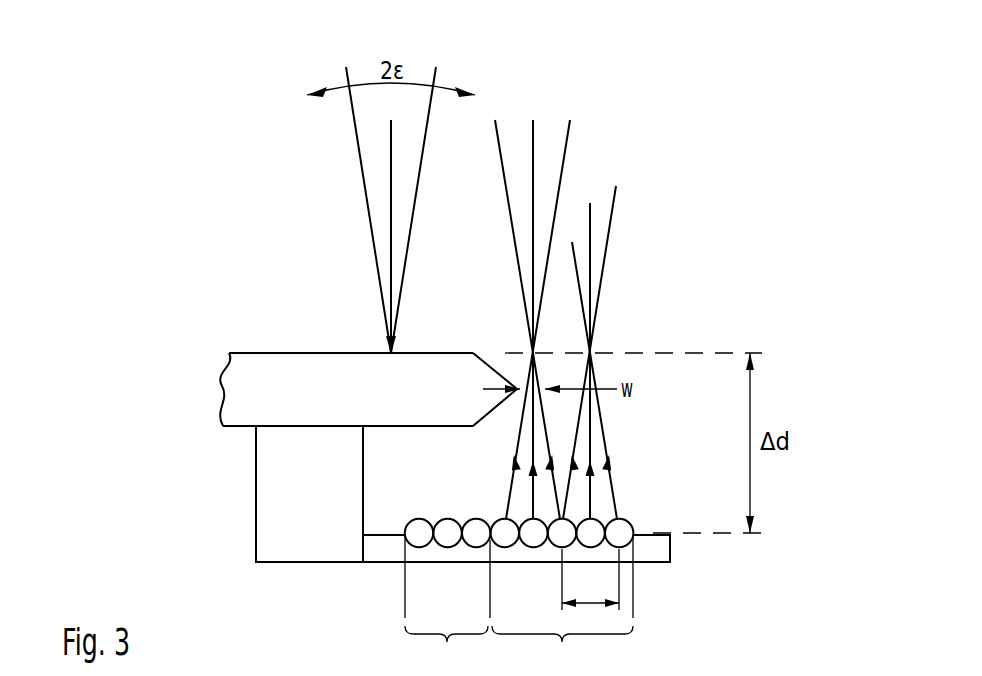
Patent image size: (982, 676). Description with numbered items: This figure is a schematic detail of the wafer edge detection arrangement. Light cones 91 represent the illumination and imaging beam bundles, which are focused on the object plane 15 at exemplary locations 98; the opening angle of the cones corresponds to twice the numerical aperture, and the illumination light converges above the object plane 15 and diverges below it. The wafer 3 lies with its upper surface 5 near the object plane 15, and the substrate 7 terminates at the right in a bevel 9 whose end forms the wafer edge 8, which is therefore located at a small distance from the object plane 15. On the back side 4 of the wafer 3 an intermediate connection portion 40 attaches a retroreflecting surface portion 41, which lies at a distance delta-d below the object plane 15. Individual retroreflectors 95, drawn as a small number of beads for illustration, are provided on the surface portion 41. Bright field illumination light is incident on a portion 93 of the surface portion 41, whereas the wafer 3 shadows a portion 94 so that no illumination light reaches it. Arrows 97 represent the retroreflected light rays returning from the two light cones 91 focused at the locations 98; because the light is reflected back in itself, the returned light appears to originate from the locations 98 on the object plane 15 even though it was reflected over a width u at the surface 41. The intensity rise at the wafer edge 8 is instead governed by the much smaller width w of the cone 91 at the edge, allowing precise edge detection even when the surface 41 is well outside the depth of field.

The wafer 3 is at (235, 320).
The upper surface of substrate 5 is at (296, 352).
The substrate 7 is at (224, 384).
The back side of the wafer 4 is at (233, 428).
The bevel 9 is at (489, 361).
The wafer edge 8 is at (519, 393).
The intermediate connection portion 40 is at (256, 529).
The retroreflecting surface portion 41 is at (668, 552).
The object plane 15 is at (726, 352).
The cones 91 is at (356, 138).
The portion of the surface portion 93 is at (562, 596).
The portion of the retroreflecting surface portion 94 is at (447, 604).
The individual retroreflectors 95 is at (474, 519).
The arrows 97 is at (578, 462).
The exemplary locations 98 is at (593, 353).